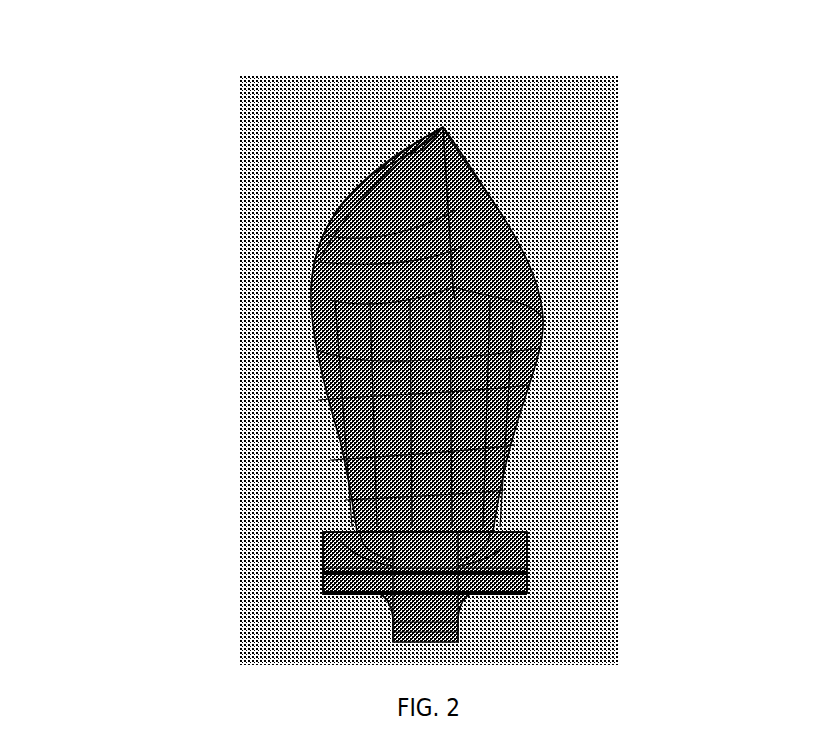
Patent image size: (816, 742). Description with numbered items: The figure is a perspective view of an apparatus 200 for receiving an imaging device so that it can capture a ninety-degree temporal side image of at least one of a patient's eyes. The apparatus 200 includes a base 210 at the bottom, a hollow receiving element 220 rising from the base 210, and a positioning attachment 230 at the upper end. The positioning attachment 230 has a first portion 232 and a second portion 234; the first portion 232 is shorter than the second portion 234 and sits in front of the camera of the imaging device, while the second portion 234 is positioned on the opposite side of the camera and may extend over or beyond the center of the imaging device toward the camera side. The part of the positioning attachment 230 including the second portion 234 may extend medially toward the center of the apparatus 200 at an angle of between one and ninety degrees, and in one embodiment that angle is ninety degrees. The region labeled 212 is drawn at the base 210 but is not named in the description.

The turbine blade model 200 is at (31, 95).
The root 210 is at (553, 668).
The platform 212 is at (300, 599).
The airfoil 220 is at (535, 437).
The tip 230 is at (538, 173).
The leading edge 232 is at (555, 229).
The trailing edge 234 is at (262, 210).